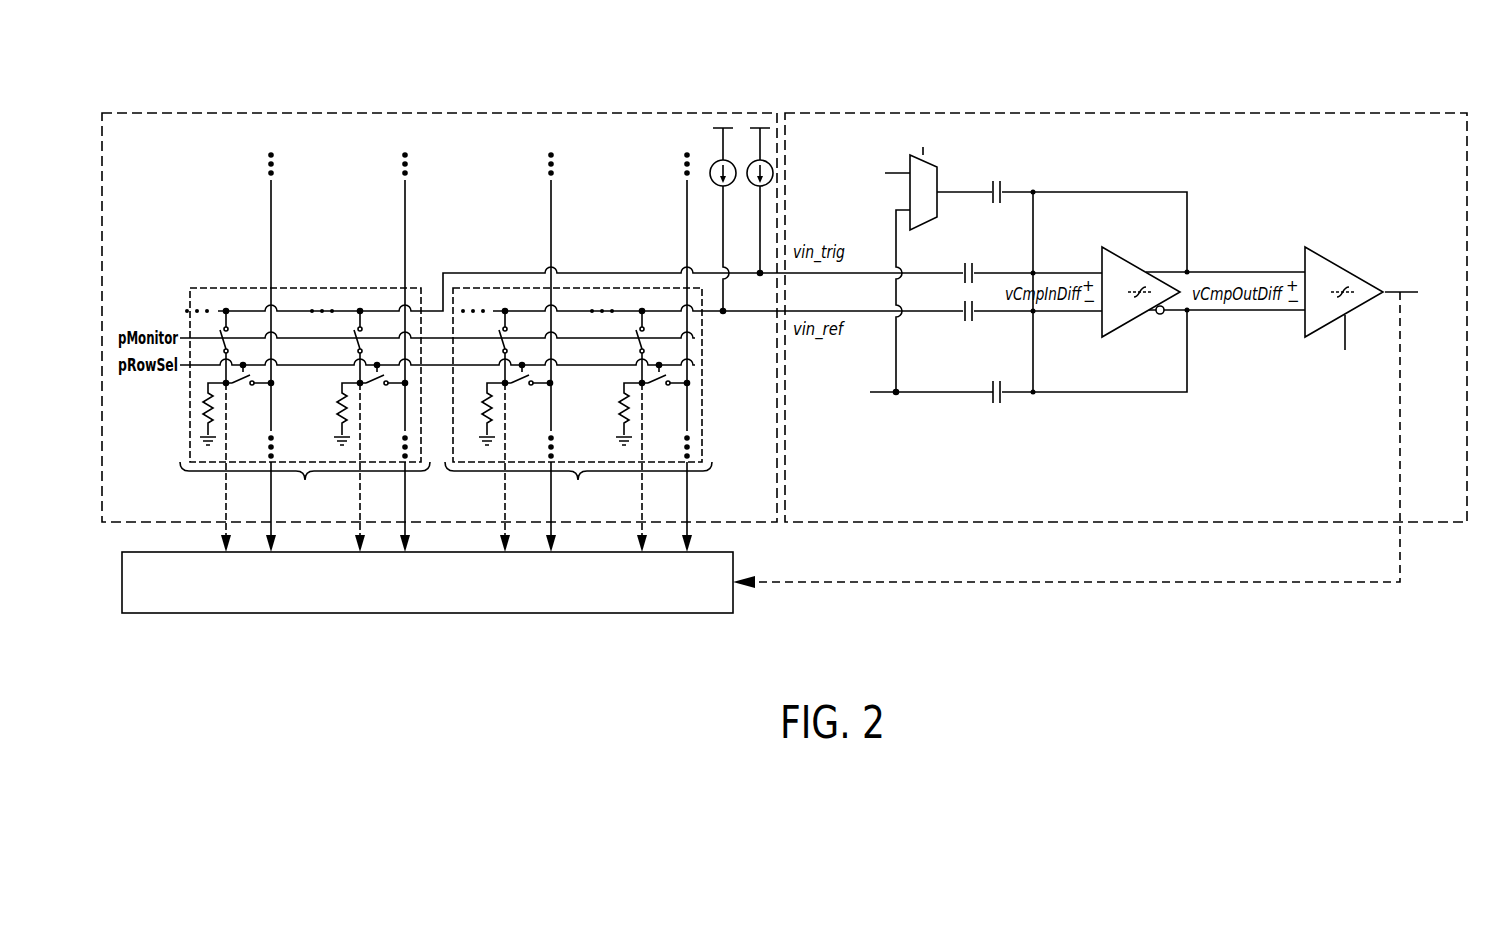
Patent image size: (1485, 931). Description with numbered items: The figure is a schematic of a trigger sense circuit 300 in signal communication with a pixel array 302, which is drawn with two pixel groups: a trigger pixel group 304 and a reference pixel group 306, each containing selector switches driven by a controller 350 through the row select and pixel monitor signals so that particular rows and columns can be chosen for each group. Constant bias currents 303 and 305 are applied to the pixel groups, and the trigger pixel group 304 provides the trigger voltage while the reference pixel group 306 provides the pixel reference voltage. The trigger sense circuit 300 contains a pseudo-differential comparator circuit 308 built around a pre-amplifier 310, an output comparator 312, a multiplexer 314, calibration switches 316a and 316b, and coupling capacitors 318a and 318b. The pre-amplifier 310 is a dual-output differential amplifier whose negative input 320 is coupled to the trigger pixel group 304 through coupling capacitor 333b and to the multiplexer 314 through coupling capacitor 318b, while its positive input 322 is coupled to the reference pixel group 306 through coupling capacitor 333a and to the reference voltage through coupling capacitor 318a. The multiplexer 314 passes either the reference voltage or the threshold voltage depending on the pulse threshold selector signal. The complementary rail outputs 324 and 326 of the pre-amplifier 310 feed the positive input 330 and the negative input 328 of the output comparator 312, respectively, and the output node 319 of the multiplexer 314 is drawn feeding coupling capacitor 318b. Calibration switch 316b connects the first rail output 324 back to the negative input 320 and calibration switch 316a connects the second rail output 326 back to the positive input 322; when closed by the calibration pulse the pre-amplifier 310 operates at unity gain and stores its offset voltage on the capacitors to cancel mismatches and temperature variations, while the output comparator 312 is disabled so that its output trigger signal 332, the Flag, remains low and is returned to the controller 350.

The trigger sense circuit 300 is at (1149, 104).
The pixel array 302 is at (189, 104).
The constant bias current 303 is at (714, 160).
The trigger pixel group 304 is at (200, 282).
The constant bias current 305 is at (751, 160).
The reference pixel group 306 is at (492, 282).
The pseudo-differential comparator circuit 308 is at (1093, 361).
The pre-amplifier 310 is at (1130, 255).
The output comparator 312 is at (1352, 260).
The multiplexer 314 is at (908, 187).
The calibration switch 316a is at (1135, 393).
The calibration switch 316b is at (1135, 191).
The coupling capacitor 318a is at (992, 388).
The coupling capacitor 318b is at (1001, 150).
The multiplexer output 319 is at (960, 194).
The negative input 320 is at (1102, 267).
The positive input 322 is at (1102, 317).
The first rail output 324 is at (1200, 269).
The second rail output 326 is at (1208, 314).
The negative input 328 is at (1308, 327).
The positive input 330 is at (1312, 266).
The output trigger signal 332 is at (1400, 291).
The coupling capacitor 333a is at (963, 312).
The coupling capacitor 333b is at (953, 273).
The controller 350 is at (445, 597).